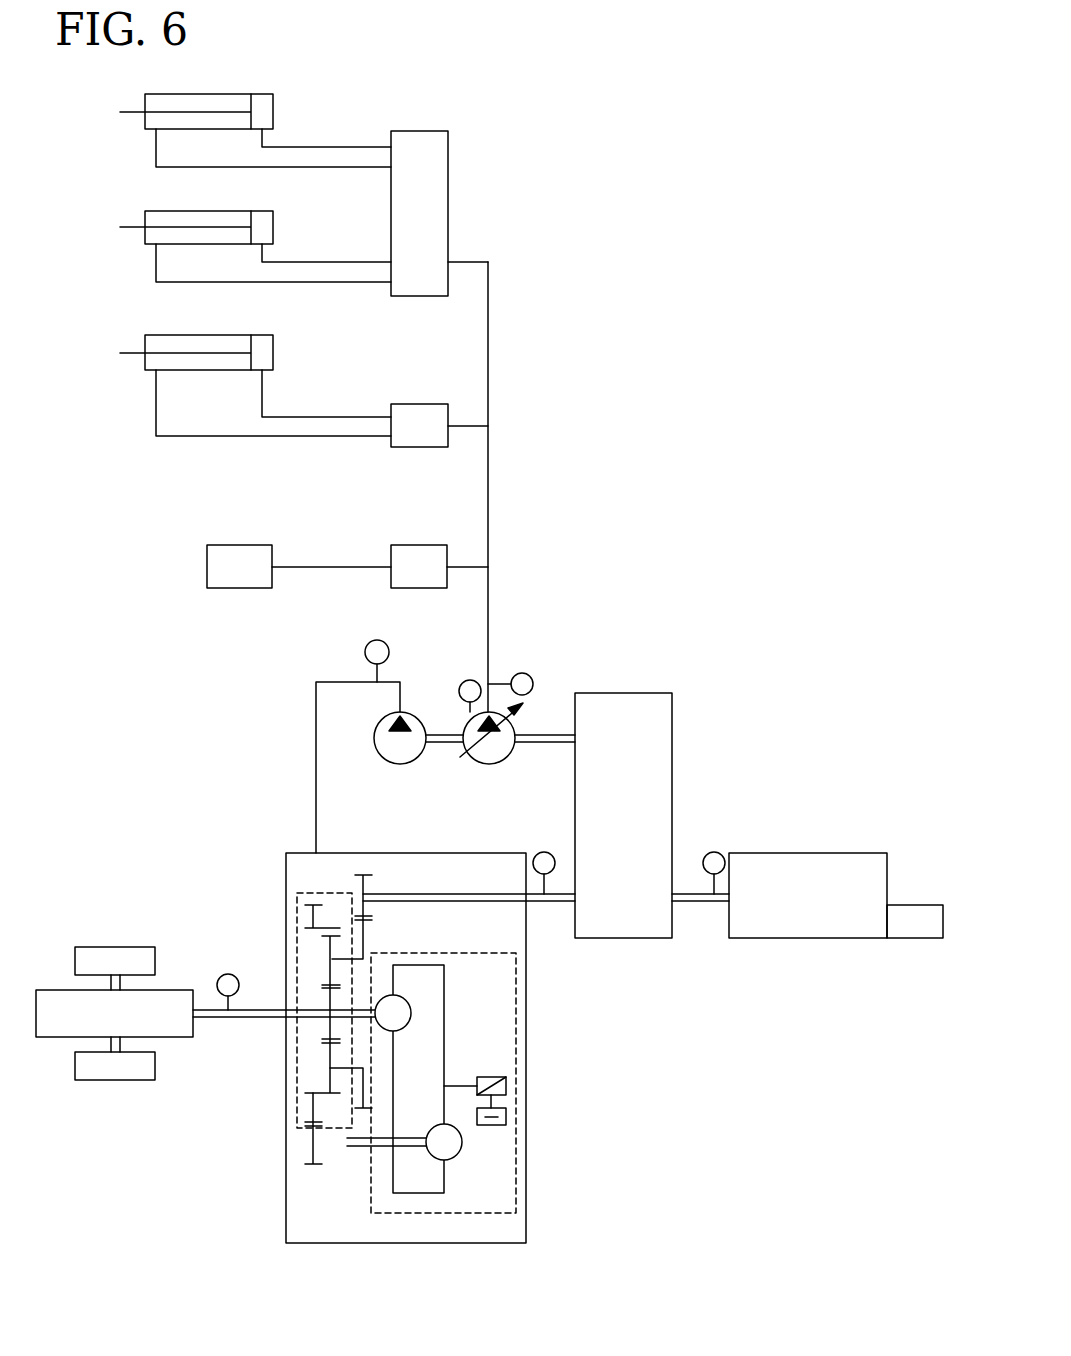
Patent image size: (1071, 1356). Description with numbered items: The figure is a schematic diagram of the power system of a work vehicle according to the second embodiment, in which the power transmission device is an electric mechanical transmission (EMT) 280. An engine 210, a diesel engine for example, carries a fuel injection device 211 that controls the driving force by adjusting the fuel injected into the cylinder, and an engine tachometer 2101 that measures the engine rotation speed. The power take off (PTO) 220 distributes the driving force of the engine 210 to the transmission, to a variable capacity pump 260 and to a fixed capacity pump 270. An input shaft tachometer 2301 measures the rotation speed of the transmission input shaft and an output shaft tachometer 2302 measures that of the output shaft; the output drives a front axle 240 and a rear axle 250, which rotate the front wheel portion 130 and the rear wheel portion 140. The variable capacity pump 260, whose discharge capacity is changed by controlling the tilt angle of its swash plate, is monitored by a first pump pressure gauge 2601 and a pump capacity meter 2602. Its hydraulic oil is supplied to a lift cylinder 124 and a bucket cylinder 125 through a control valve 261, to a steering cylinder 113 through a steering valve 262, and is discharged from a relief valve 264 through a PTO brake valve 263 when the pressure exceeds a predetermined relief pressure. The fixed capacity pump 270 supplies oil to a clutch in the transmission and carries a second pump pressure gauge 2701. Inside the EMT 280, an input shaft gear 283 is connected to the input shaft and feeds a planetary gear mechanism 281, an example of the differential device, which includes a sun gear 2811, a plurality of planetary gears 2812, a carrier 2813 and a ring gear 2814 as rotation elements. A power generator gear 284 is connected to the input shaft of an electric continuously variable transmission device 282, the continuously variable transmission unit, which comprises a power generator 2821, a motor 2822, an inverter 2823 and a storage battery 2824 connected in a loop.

The lift cylinder 124 is at (212, 94).
The bucket cylinder 125 is at (212, 211).
The steering cylinder 113 is at (212, 335).
The control valve 261 is at (420, 131).
The steering valve 262 is at (420, 404).
The PTO brake valve 263 is at (420, 545).
The relief valve 264 is at (262, 525).
The second pump pressure gauge 2701 is at (373, 640).
The pump capacity meter 2602 is at (463, 681).
The first pump pressure gauge 2601 is at (545, 659).
The fixed capacity pump 270 is at (396, 765).
The variable capacity pump 260 is at (486, 765).
The power take off (PTO) 220 is at (628, 693).
The input shaft tachometer 2301 is at (543, 851).
The engine tachometer 2101 is at (735, 835).
The engine 210 is at (815, 853).
The fuel injection device 211 is at (918, 905).
The electric mechanical transmission (EMT) 280 is at (330, 1245).
The input shaft gear 283 is at (362, 884).
The carrier 2813 is at (368, 937).
The ring gear 2814 is at (306, 920).
The sun gear 2811 is at (330, 1027).
The planetary gears 2812 is at (330, 1057).
The power generator gear 284 is at (313, 1152).
The planetary gear mechanism 281 is at (296, 1128).
The output shaft tachometer 2302 is at (222, 974).
The front wheel portion 130 is at (115, 947).
The rear wheel portion 140 is at (138, 1081).
The front axle 240 is at (112, 1059).
The rear axle 250 is at (52, 1038).
The electric continuously variable transmission device 282 is at (442, 1216).
The motor 2822 is at (412, 1013).
The inverter 2823 is at (506, 1087).
The storage battery 2824 is at (506, 1115).
The power generator 2821 is at (462, 1144).